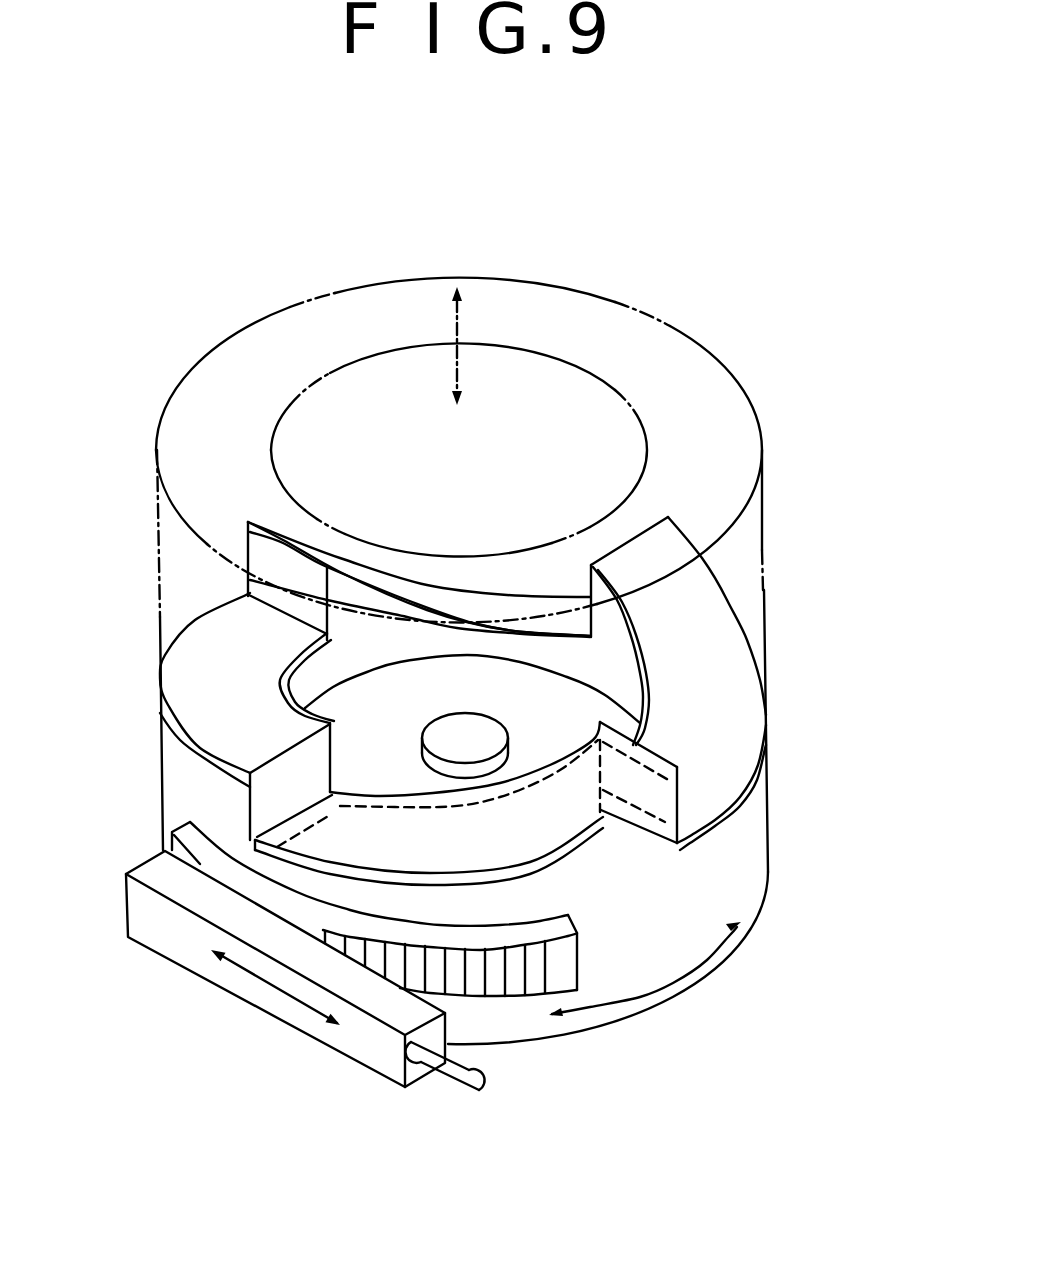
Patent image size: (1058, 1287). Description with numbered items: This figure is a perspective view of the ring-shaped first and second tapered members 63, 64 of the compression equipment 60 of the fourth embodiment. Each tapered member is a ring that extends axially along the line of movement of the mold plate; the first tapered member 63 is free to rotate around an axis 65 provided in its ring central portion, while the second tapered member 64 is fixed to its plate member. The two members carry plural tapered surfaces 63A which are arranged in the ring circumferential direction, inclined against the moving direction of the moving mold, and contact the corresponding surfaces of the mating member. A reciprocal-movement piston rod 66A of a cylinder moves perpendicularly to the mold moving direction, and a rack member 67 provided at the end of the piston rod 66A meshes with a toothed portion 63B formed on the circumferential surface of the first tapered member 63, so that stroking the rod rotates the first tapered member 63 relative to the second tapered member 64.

The compression equipment 60 is at (530, 236).
The first tapered member 63 is at (755, 868).
The tapered surfaces 63A is at (198, 679).
The toothed portion 63B is at (550, 963).
The second tapered member 64 is at (763, 512).
The axis 65 is at (482, 727).
The piston rod 66A is at (478, 1088).
The rack member 67 is at (351, 1037).